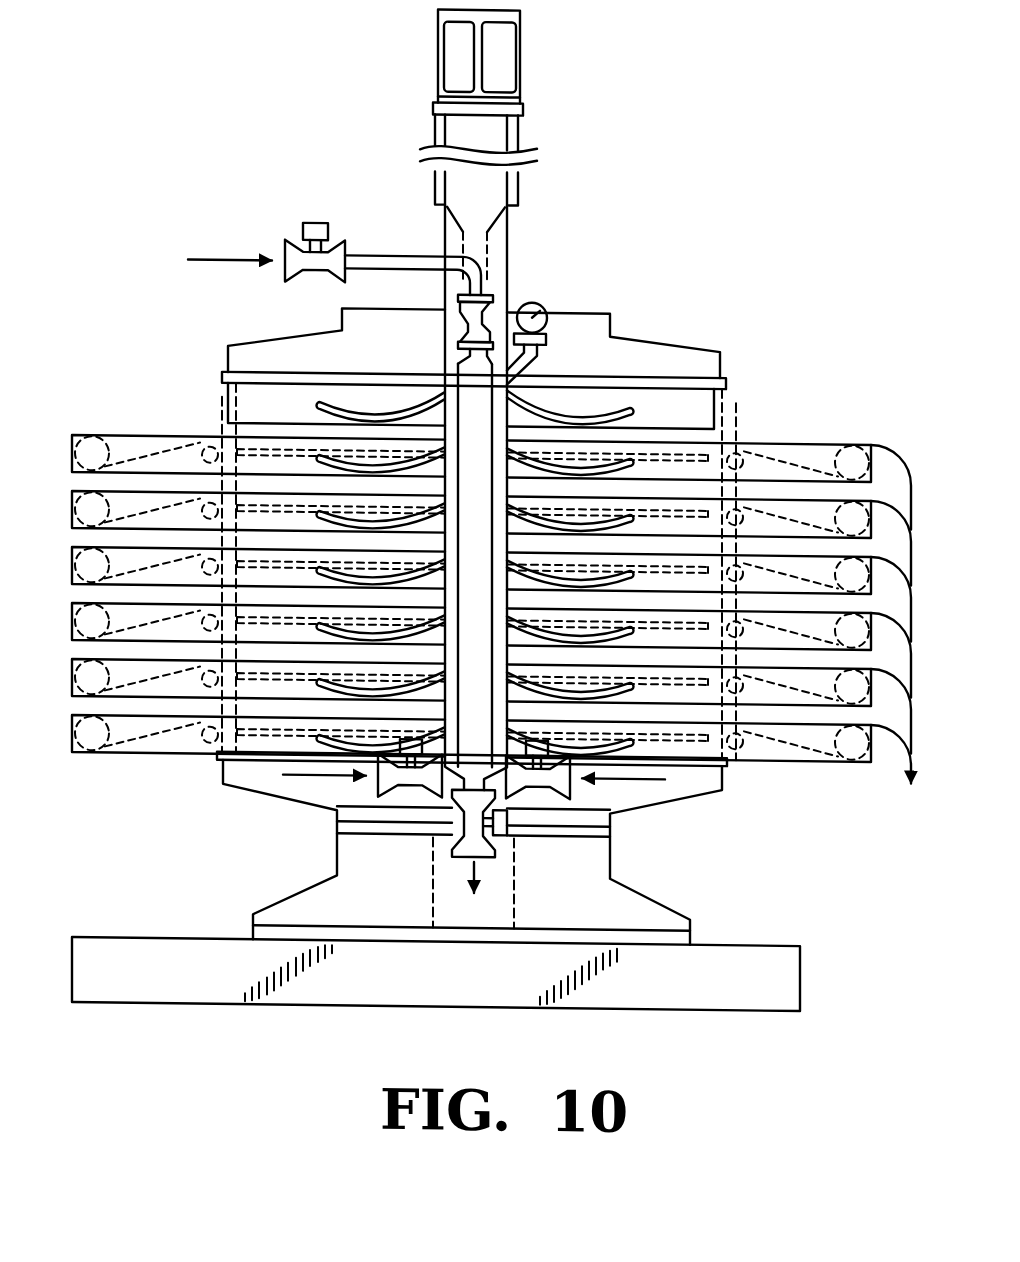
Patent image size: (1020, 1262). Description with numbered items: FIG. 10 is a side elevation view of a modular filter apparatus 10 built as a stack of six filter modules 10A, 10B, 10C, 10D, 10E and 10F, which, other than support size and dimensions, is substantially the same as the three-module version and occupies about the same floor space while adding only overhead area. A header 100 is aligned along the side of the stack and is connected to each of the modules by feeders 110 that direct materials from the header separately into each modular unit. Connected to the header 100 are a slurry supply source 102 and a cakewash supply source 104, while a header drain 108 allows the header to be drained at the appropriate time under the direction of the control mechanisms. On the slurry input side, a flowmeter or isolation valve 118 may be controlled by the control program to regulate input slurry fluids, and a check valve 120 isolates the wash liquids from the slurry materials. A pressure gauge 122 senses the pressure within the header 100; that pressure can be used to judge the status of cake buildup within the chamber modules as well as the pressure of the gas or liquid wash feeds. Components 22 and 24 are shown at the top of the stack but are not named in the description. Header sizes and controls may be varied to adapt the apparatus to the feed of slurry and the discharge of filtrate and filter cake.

The modular filter apparatus 10 is at (91, 383).
The filter module 10A is at (733, 432).
The filter module 10B is at (761, 482).
The filter module 10C is at (790, 536).
The filter module 10D is at (755, 655).
The filter module 10E is at (797, 706).
The filter module 10F is at (833, 764).
The motor 22 is at (508, 50).
The drive housing 24 is at (490, 133).
The header 100 is at (480, 418).
The slurry supply source 102 is at (540, 782).
The cakewash supply source 104 is at (405, 780).
The header drain 108 is at (457, 825).
The feeders 110 is at (548, 397).
The flowmeter or isolation valve 118 is at (290, 242).
The check valve 120 is at (478, 310).
The pressure gauge 122 is at (536, 304).